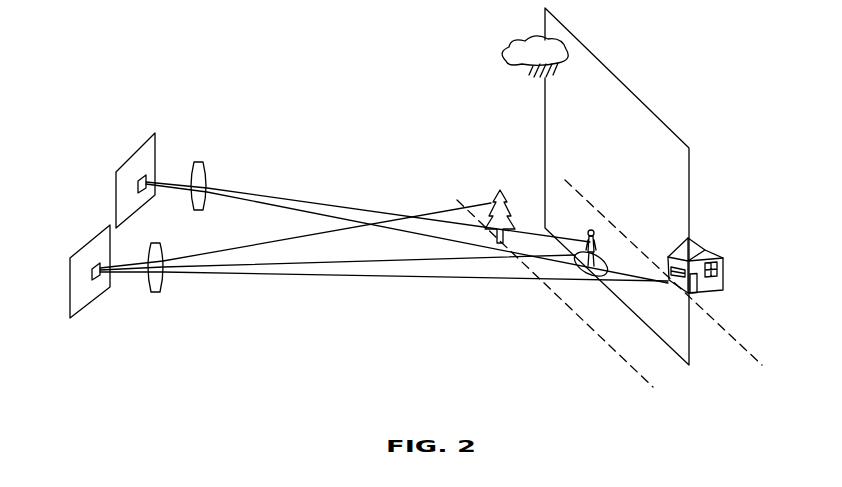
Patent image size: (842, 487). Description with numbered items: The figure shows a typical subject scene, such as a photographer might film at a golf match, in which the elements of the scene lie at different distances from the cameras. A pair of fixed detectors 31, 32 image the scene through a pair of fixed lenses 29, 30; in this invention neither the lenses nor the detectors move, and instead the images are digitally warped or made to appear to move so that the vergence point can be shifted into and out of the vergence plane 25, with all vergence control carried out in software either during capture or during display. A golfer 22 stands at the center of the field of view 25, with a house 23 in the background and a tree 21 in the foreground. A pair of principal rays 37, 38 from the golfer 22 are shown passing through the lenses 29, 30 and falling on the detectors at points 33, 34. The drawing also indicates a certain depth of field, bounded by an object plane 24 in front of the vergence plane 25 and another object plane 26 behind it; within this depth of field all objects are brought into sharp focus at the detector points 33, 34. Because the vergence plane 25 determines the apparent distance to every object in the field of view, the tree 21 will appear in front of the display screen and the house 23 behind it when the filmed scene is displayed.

The tree 21 is at (499, 189).
The golfer 22 is at (590, 230).
The house 23 is at (694, 238).
The object plane 24 is at (600, 333).
The vergence plane 25 is at (610, 92).
The object plane 26 is at (748, 353).
The fixed lens 29 is at (198, 162).
The fixed lens 30 is at (157, 292).
The fixed detector 31 is at (149, 135).
The fixed detector 32 is at (103, 232).
The detector point 33 is at (139, 182).
The detector point 34 is at (93, 270).
The principal ray 37 is at (328, 207).
The principal ray 38 is at (337, 257).